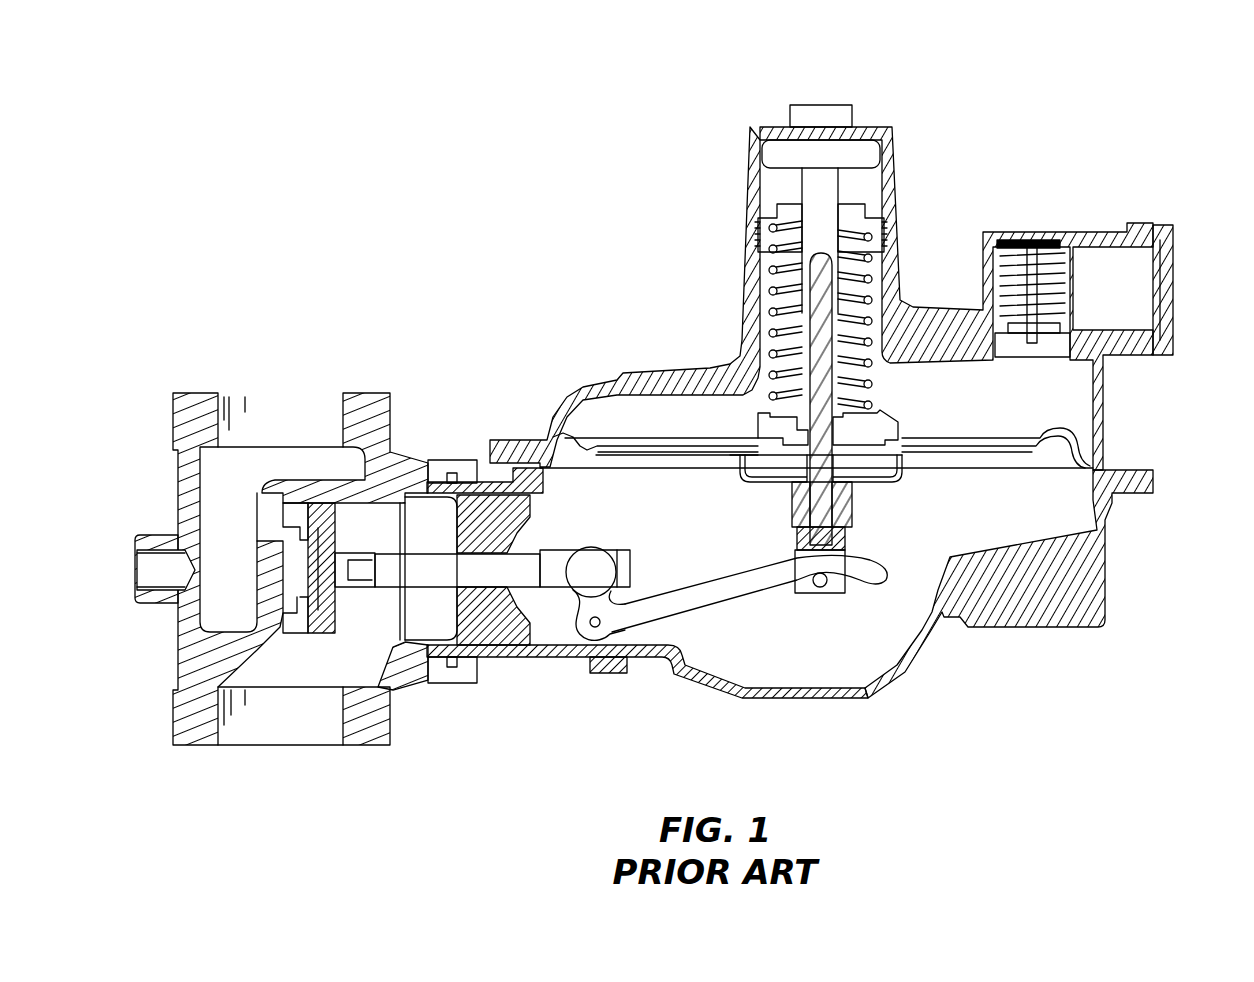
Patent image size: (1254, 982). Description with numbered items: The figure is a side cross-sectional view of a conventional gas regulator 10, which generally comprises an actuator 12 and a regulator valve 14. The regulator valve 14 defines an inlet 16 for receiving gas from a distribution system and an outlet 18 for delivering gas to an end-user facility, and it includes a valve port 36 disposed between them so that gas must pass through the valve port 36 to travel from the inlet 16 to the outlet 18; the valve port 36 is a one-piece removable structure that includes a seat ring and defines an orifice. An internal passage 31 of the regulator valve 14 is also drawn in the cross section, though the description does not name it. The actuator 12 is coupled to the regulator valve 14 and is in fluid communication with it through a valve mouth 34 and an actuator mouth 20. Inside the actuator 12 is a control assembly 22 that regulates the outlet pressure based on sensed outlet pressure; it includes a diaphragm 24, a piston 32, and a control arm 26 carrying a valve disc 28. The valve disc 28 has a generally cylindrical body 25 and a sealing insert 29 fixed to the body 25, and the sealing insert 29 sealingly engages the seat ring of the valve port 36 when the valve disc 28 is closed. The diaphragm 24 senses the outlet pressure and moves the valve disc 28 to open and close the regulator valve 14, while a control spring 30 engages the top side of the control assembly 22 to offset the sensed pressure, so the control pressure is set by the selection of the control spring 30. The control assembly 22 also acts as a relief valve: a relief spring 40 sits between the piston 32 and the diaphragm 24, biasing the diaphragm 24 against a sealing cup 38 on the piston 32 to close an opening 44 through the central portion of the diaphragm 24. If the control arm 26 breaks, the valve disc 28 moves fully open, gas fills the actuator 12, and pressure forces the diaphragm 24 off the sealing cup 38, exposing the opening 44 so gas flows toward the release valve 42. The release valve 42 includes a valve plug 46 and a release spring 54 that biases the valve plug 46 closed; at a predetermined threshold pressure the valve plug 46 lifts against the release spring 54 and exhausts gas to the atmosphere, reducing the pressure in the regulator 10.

The gas regulator 10 is at (928, 97).
The actuator 12 is at (894, 250).
The regulator valve 14 is at (382, 393).
The inlet 16 is at (220, 417).
The outlet 18 is at (224, 735).
The actuator mouth 20 is at (497, 655).
The control assembly 22 is at (877, 492).
The diaphragm 24 is at (1038, 438).
The body 25 is at (305, 637).
The control arm 26 is at (651, 620).
The valve disc 28 is at (320, 503).
The sealing insert 29 is at (312, 568).
The control spring 30 is at (778, 280).
The inlet passage 31 is at (272, 554).
The piston 32 is at (816, 337).
The valve mouth 34 is at (410, 665).
The valve port 36 is at (290, 580).
The sealing cup 38 is at (757, 478).
The relief spring 40 is at (843, 375).
The release valve 42 is at (1066, 290).
The opening 44 is at (823, 423).
The valve plug 46 is at (1053, 352).
The release spring 54 is at (1076, 245).